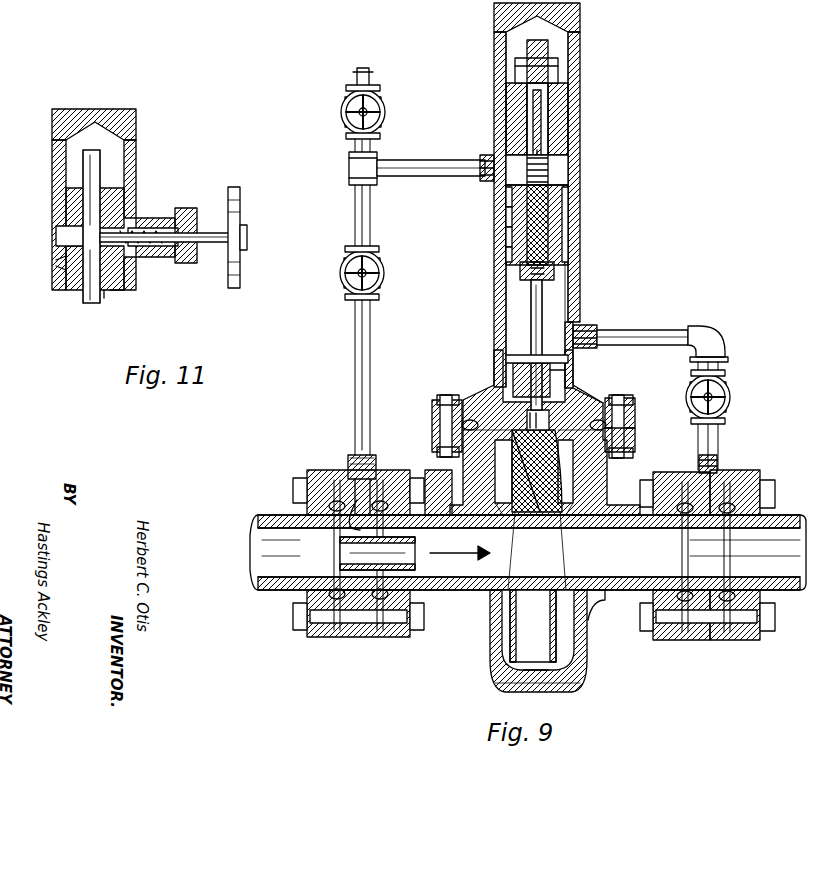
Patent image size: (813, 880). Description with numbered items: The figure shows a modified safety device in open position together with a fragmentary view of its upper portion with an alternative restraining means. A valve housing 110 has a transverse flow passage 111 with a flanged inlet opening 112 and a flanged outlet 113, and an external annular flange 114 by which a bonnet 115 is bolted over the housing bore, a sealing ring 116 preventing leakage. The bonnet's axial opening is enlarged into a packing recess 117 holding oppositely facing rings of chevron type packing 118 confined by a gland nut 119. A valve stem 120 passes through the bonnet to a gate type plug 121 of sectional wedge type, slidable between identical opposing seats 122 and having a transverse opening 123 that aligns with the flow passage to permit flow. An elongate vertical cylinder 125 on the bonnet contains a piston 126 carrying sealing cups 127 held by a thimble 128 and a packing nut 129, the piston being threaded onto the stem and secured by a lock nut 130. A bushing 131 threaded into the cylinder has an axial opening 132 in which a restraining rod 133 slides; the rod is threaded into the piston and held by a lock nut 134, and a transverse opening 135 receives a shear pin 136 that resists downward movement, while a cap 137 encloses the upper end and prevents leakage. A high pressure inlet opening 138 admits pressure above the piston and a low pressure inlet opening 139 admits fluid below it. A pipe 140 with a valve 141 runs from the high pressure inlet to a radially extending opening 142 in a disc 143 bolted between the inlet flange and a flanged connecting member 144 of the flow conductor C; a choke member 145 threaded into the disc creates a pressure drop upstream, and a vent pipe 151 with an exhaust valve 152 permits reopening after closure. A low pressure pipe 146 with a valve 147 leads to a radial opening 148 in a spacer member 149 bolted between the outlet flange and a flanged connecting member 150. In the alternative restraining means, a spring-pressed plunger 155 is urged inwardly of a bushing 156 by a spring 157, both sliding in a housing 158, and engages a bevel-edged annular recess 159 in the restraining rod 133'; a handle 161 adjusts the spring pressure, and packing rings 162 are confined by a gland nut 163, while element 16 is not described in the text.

In FIG. 9, the valve housing 110 is at (497, 645).
In FIG. 9, the transverse flow passage 111 is at (620, 600).
In FIG. 9, the flanged inlet opening 112 is at (413, 470).
In FIG. 9, the flanged outlet 113 is at (670, 480).
In FIG. 9, the external annular flange 114 is at (636, 436).
In FIG. 9, the bonnet 115 is at (490, 402).
In FIG. 9, the sealing ring 116 is at (636, 412).
In FIG. 9, the packing recess 117 is at (570, 372).
In FIG. 9, the chevron type packing 118 is at (513, 372).
In FIG. 9, the gland nut 119 is at (590, 402).
In FIG. 9, the valve stem 120 is at (520, 309).
In FIG. 9, the gate type plug 121 is at (512, 465).
In FIG. 9, the seats 122 is at (578, 590).
In FIG. 9, the transverse opening 123 is at (527, 592).
In FIG. 9, the cylinder 125 is at (575, 290).
In FIG. 11, the cylinder 125 is at (118, 292).
In FIG. 9, the piston 126 is at (572, 210).
In FIG. 9, the sealing cups 127 is at (506, 232).
In FIG. 9, the thimble 128 is at (506, 212).
In FIG. 9, the packing nut 129 is at (506, 192).
In FIG. 9, the lock nut 130 is at (560, 268).
In FIG. 9, the bushing 131 is at (580, 112).
In FIG. 9, the axial opening 132 is at (577, 108).
In FIG. 9, the restraining rod 133 is at (589, 109).
In FIG. 9, the lock nut 134 is at (568, 170).
In FIG. 9, the transverse opening 135 is at (560, 62).
In FIG. 9, the shear pin 136 is at (515, 70).
In FIG. 9, the cap 137 is at (500, 44).
In FIG. 11, the cap 137 is at (135, 150).
In FIG. 9, the high pressure inlet opening 138 is at (482, 156).
In FIG. 9, the low pressure inlet opening 139 is at (594, 325).
In FIG. 9, the pipe 140 is at (395, 176).
In FIG. 9, the valve 141 is at (341, 280).
In FIG. 9, the radially extending opening 142 is at (350, 465).
In FIG. 9, the disc 143 is at (360, 637).
In FIG. 9, the flanged connecting member 144 is at (325, 637).
In FIG. 9, the choke member 145 is at (415, 560).
In FIG. 9, the low pressure pipe 146 is at (680, 325).
In FIG. 9, the valve 147 is at (728, 410).
In FIG. 9, the radial opening 148 is at (742, 472).
In FIG. 9, the spacer member 149 is at (690, 640).
In FIG. 9, the flanged connecting member 150 is at (735, 640).
In FIG. 9, the vent pipe 151 is at (372, 74).
In FIG. 9, the exhaust valve 152 is at (385, 120).
In FIG. 11, the spring-pressed plunger 155 is at (128, 205).
In FIG. 11, the bushing 156 is at (62, 236).
In FIG. 11, the spring 157 is at (168, 212).
In FIG. 11, the housing 158 is at (144, 252).
In FIG. 11, the annular recess 159 is at (62, 250).
In FIG. 11, the handle 161 is at (240, 262).
In FIG. 11, the packing rings 162 is at (200, 208).
In FIG. 11, the gland nut 163 is at (215, 212).
In FIG. 11, the shaft 16 is at (212, 250).
In FIG. 11, the restraining rod 133' is at (63, 237).
In FIG. 9, the flow conductor C is at (258, 597).